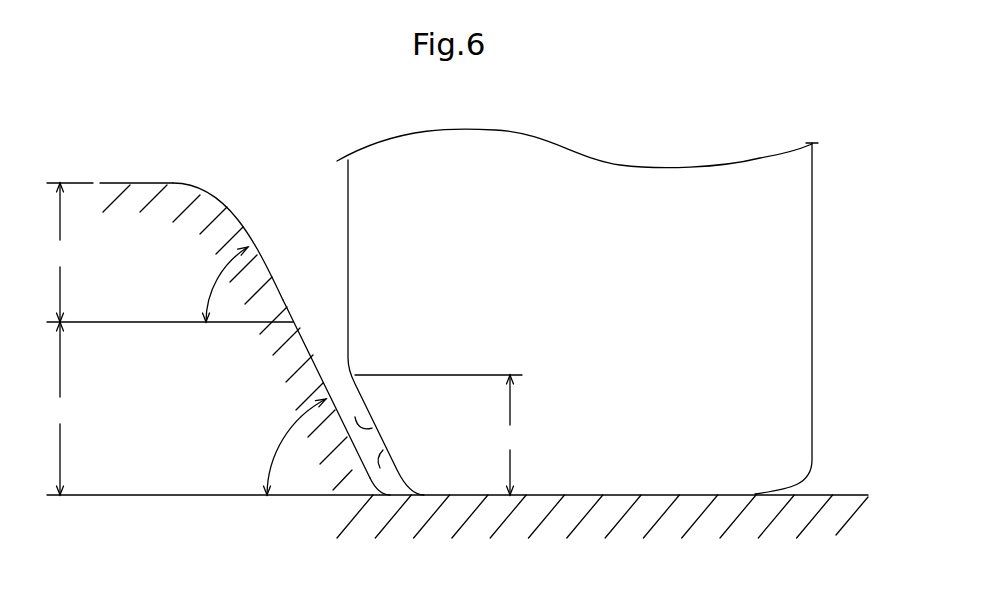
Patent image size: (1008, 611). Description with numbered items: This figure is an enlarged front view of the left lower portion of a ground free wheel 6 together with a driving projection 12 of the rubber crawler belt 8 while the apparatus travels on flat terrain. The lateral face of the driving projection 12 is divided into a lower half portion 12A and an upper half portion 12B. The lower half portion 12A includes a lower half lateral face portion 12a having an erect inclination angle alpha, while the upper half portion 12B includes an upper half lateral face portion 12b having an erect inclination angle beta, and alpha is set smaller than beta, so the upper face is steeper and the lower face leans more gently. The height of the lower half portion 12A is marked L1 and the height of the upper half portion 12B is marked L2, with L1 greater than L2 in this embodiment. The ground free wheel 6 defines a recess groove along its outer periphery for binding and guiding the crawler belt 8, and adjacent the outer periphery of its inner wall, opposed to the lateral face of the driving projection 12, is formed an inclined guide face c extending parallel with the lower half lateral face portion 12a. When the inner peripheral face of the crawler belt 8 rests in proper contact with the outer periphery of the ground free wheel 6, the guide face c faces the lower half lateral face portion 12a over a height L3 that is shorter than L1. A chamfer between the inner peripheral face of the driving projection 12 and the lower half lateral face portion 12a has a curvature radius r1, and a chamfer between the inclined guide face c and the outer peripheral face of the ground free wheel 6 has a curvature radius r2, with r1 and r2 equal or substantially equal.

The driving projection 12 is at (158, 185).
The upper half portion 12B is at (102, 253).
The lower half portion 12A is at (163, 407).
The upper half lateral face portion 12b is at (265, 263).
The lower half lateral face portion 12a is at (317, 368).
The ground free wheel 6 is at (798, 216).
The rubber crawler belt 8 is at (819, 496).
The height of the lower half L1 is at (169, 408).
The height of the upper half L2 is at (69, 252).
The height of the guide face L3 is at (440, 435).
The inclined guide face c is at (363, 413).
The curvature radius of the driving projection chamfer r1 is at (372, 478).
The curvature radius of the free wheel chamfer r2 is at (408, 485).